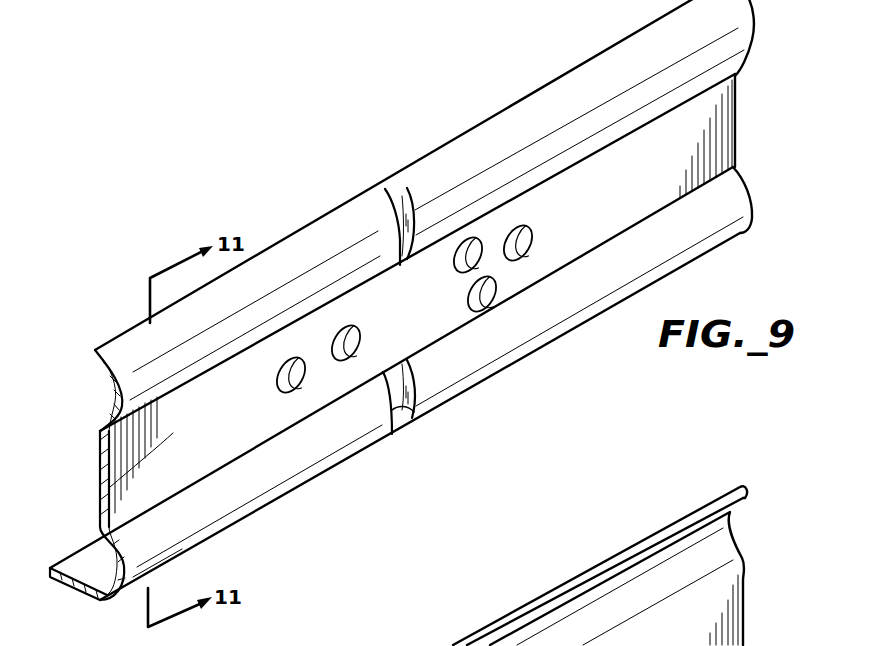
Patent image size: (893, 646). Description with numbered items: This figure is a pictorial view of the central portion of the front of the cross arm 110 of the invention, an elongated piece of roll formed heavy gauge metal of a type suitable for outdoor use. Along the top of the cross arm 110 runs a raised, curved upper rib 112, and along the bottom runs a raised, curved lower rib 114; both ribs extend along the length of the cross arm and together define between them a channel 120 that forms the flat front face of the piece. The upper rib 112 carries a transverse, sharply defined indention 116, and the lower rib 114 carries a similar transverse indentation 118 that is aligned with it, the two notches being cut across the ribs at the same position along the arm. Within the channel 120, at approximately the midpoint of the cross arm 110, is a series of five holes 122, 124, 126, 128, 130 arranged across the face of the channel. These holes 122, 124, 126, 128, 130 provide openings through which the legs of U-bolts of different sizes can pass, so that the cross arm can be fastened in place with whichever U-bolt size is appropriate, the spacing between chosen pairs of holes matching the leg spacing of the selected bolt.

The cross arm 110 is at (393, 300).
The upper rib 112 is at (556, 82).
The lower rib 114 is at (528, 348).
The indention 116 is at (395, 205).
The indentation 118 is at (413, 411).
The channel 120 is at (110, 483).
The hole 122 is at (292, 394).
The hole 124 is at (343, 326).
The hole 126 is at (456, 273).
The hole 128 is at (468, 301).
The hole 130 is at (526, 228).